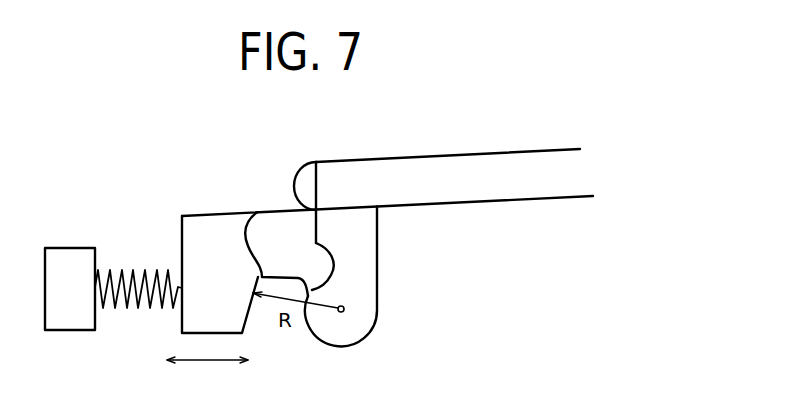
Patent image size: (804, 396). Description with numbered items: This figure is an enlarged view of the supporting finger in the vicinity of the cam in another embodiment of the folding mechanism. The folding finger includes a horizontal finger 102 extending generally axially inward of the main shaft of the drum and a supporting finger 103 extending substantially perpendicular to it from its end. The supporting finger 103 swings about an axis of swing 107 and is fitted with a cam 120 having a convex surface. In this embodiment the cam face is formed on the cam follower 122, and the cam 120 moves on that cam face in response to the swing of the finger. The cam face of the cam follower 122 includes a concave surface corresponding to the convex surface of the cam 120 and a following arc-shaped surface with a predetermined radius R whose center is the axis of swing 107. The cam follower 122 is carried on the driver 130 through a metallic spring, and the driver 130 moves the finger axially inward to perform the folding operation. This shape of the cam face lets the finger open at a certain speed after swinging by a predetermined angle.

The horizontal finger 102 is at (439, 156).
The supporting finger 103 is at (377, 273).
The axis of swing 107 is at (344, 311).
The cam 120 is at (268, 213).
The cam follower 122 is at (210, 214).
The driver 130 is at (70, 248).